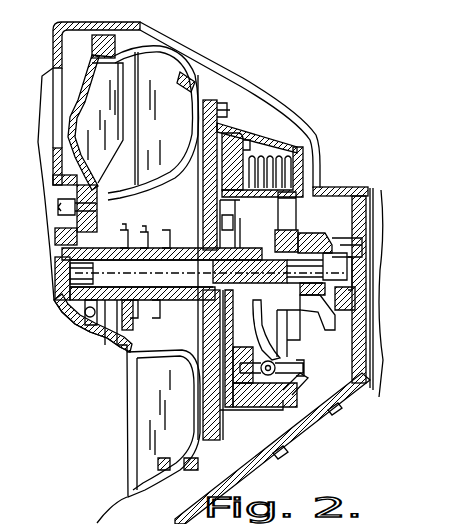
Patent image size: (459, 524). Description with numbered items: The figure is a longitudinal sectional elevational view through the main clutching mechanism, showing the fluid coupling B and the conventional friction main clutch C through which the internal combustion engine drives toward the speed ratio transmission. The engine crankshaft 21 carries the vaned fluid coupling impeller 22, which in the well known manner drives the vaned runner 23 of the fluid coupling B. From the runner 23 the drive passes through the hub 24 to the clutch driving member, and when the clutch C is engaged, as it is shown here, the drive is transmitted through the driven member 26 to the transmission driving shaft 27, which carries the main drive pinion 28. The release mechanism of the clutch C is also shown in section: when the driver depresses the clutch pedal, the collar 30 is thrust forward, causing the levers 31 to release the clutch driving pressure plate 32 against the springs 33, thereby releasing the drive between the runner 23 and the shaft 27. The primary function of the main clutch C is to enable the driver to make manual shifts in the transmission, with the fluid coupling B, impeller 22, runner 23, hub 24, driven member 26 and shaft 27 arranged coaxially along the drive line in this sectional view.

The fluid coupling B is at (160, 78).
The friction main clutch C is at (247, 112).
The engine crankshaft 21 is at (62, 237).
The fluid coupling impeller 22 is at (82, 107).
The runner 23 is at (208, 101).
The hub 24 is at (100, 262).
The driven member 26 is at (236, 222).
The transmission driving shaft 27 is at (337, 290).
The main drive pinion 28 is at (240, 118).
The collar 30 is at (313, 236).
The levers 31 is at (300, 337).
The clutch driving pressure plate 32 is at (258, 410).
The springs 33 is at (288, 147).